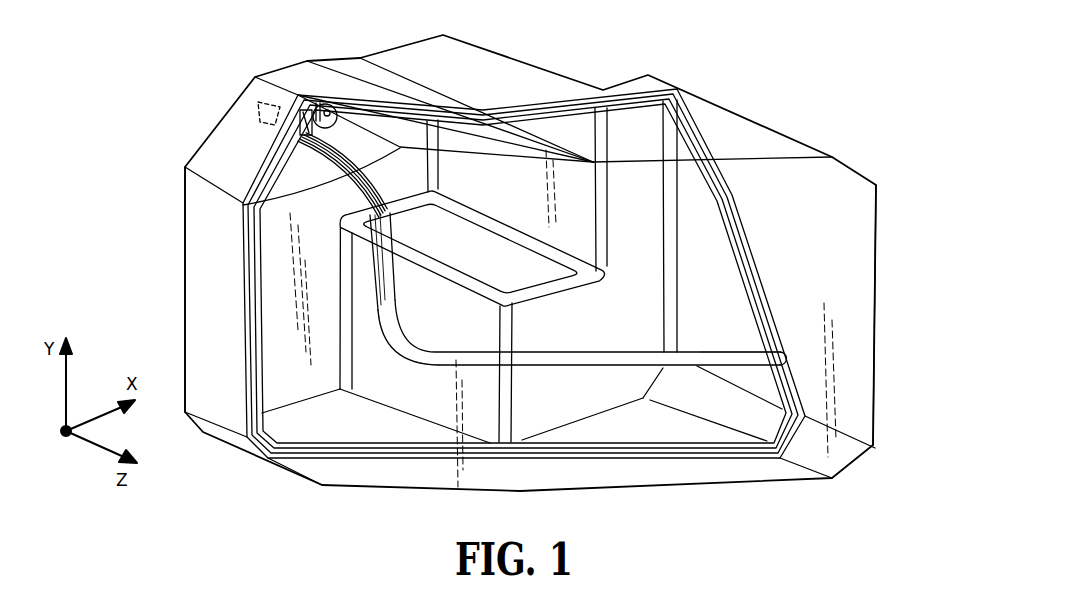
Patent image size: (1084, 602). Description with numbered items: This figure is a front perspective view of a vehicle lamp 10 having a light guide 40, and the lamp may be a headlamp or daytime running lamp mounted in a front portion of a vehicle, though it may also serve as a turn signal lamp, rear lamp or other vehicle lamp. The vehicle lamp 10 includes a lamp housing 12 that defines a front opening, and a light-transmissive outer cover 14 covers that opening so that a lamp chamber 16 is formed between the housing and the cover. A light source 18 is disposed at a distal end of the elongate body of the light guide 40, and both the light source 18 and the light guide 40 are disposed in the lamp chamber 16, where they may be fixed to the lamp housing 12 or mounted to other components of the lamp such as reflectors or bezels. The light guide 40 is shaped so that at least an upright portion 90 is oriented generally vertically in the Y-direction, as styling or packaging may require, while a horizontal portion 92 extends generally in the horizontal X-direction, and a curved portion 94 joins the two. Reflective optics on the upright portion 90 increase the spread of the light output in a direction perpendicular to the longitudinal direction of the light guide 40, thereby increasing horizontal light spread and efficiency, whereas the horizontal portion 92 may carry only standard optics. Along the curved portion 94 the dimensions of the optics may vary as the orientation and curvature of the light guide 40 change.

The vehicle lamp 10 is at (618, 50).
The lamp housing 12 is at (200, 240).
The light-transmissive outer cover 14 is at (870, 297).
The lamp chamber 16 is at (730, 193).
The light source 18 is at (260, 103).
The light guide 40 is at (437, 358).
The upright portion 90 is at (383, 277).
The horizontal portion 92 is at (723, 362).
The curved portion 94 is at (400, 348).